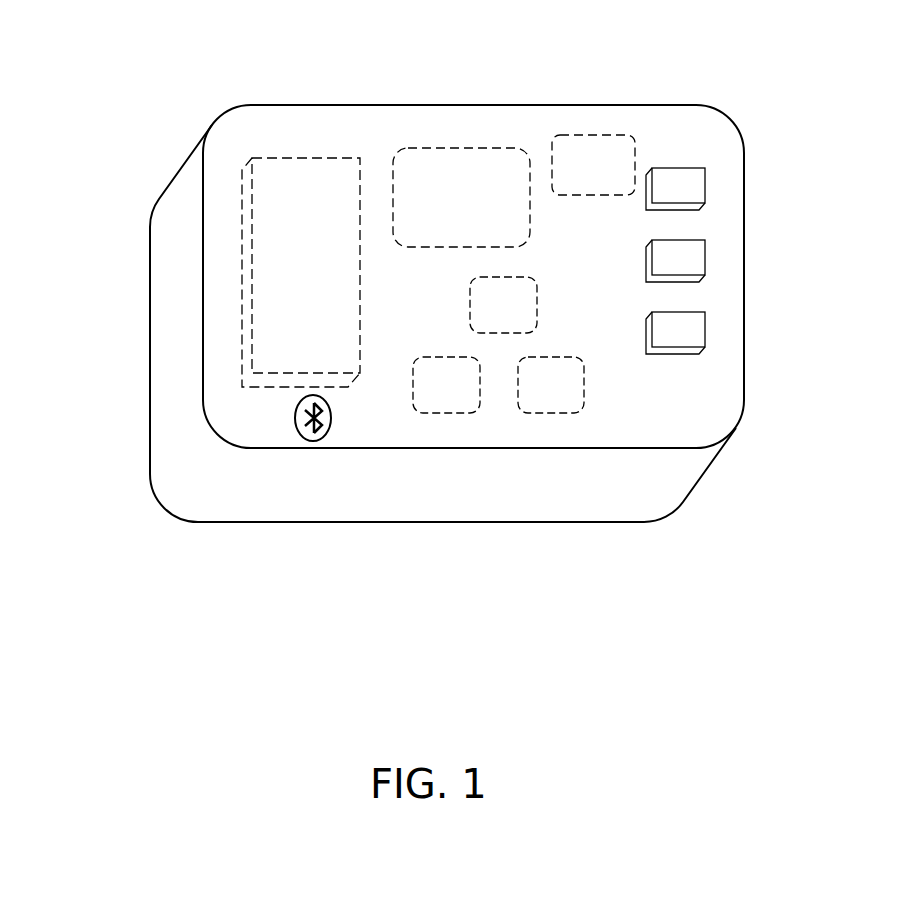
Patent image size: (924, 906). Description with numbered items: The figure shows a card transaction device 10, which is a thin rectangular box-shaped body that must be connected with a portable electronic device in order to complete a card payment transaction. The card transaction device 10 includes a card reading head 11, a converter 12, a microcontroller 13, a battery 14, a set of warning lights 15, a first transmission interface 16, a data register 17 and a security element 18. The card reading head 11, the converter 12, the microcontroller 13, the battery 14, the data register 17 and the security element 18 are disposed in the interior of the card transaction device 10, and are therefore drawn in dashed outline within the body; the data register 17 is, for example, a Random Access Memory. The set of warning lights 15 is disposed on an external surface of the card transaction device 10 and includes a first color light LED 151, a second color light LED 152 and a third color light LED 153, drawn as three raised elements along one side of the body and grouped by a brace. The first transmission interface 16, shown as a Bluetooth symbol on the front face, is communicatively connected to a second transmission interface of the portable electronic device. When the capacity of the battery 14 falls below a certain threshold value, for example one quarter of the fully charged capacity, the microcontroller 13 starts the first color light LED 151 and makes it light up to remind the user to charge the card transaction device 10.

The card transaction device 10 is at (752, 629).
The card reading head 11 is at (450, 148).
The converter 12 is at (413, 398).
The microcontroller 13 is at (537, 290).
The battery 14 is at (295, 158).
The set of warning lights 15 is at (773, 261).
The first color light LED 151 is at (705, 185).
The second color light LED 152 is at (705, 257).
The third color light LED 153 is at (746, 333).
The first transmission interface 16 is at (302, 437).
The data register 17 is at (588, 135).
The security element 18 is at (584, 398).